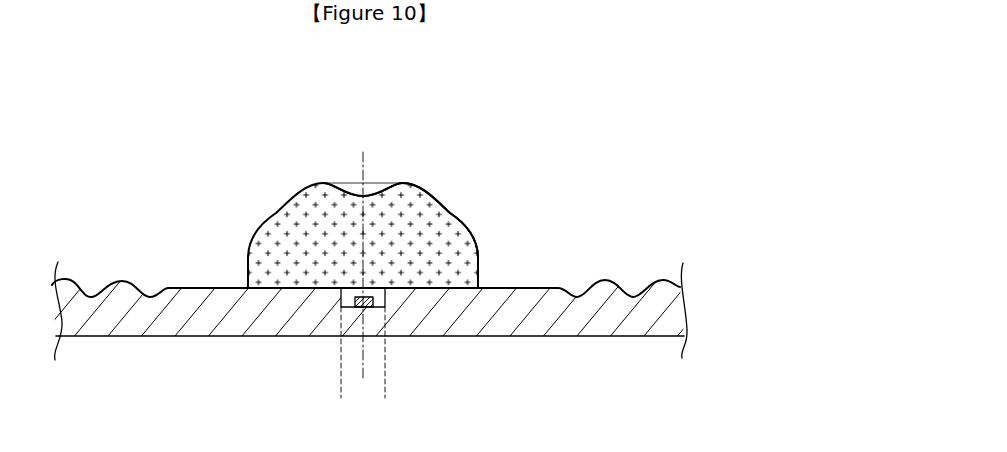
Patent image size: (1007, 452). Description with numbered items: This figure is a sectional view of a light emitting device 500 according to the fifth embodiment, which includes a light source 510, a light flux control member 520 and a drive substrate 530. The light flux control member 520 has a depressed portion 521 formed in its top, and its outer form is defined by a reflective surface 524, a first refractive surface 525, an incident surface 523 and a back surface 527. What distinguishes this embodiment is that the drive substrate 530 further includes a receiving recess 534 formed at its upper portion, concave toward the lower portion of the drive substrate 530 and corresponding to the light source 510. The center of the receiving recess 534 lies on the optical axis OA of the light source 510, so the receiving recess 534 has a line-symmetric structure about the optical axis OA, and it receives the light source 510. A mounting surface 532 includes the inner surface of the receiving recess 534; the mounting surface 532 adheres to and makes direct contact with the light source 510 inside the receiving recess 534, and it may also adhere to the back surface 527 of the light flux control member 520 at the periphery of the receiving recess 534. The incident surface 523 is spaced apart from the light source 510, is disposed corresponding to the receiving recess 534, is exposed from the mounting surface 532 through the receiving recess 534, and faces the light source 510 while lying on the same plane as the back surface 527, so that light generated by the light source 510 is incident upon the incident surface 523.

The light emitting device 500 is at (681, 86).
The light source 510 is at (382, 301).
The light flux control member 520 is at (402, 165).
The depressed portion 521 is at (355, 190).
The incident surface 523 is at (348, 283).
The reflective surface 524 is at (377, 197).
The first refractive surface 525 is at (442, 212).
The back surface 527 is at (293, 283).
The drive substrate 530 is at (602, 328).
The mounting surface 532 is at (456, 292).
The receiving recess 534 is at (341, 393).
The optical axis OA is at (362, 256).